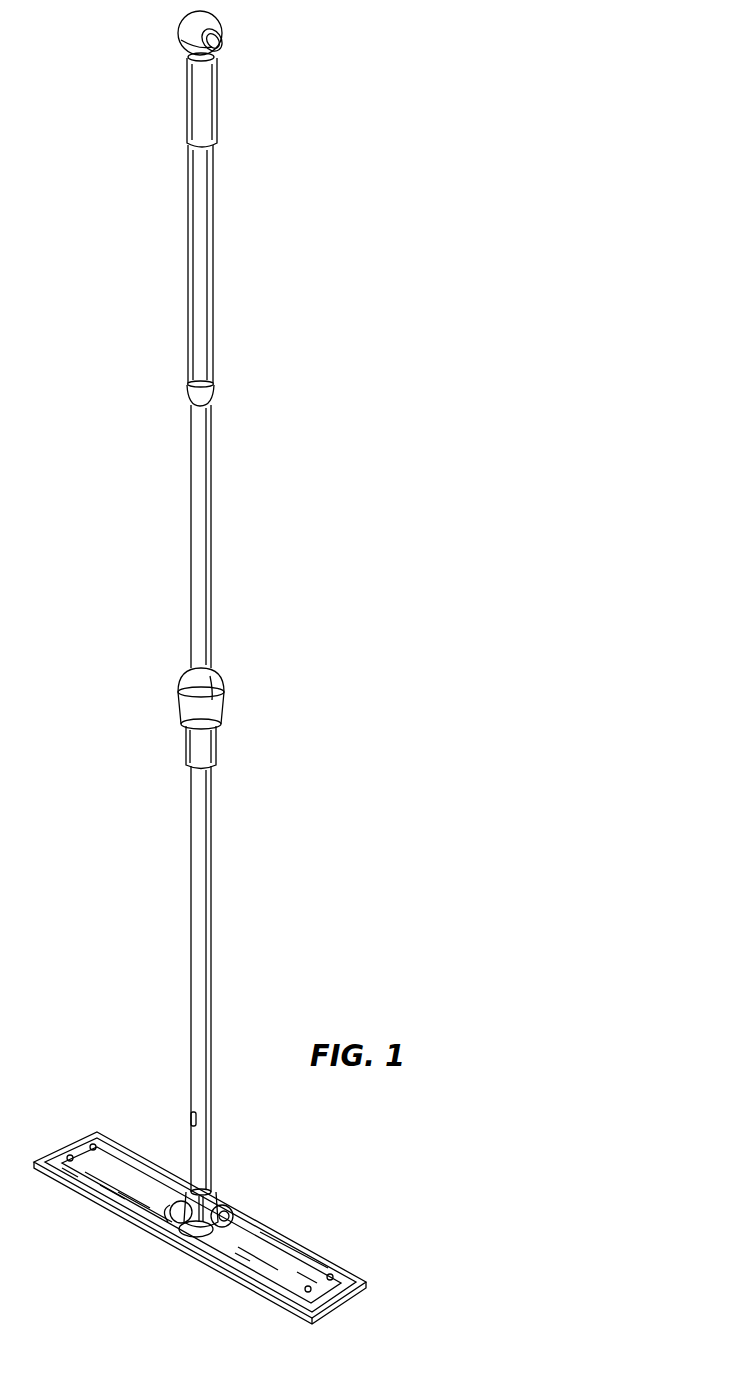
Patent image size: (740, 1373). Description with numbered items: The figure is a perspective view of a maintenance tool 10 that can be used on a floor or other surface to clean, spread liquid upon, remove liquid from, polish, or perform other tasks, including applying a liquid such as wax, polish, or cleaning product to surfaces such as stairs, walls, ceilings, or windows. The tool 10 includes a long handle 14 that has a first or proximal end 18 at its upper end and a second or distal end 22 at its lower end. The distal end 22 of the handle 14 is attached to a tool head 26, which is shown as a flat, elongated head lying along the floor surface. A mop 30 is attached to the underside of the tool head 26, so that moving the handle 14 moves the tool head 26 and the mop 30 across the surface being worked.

The maintenance tool 10 is at (427, 190).
The handle 14 is at (228, 326).
The proximal end 18 is at (215, 180).
The distal end 22 is at (200, 950).
The tool head 26 is at (290, 1262).
The mop 30 is at (378, 1282).